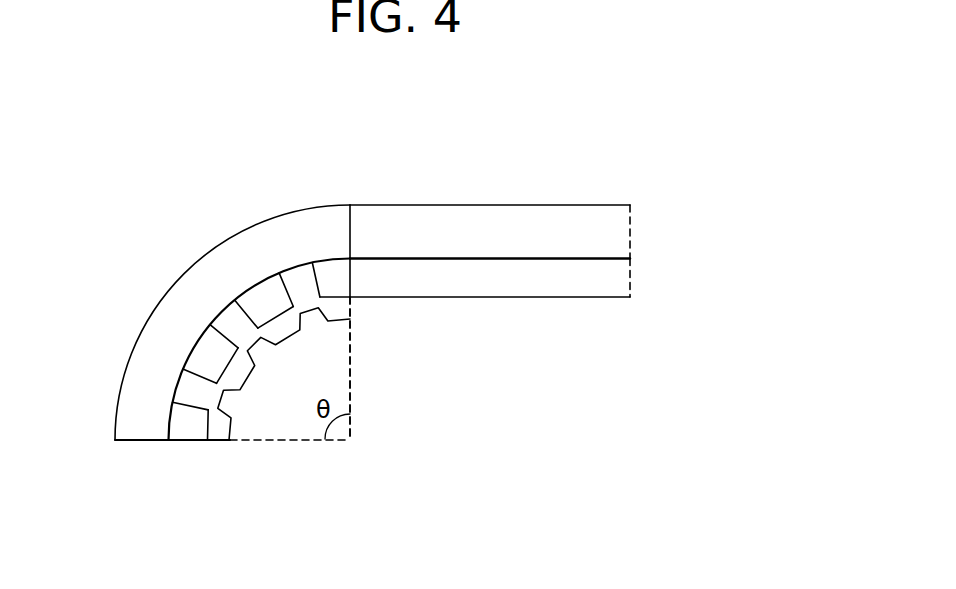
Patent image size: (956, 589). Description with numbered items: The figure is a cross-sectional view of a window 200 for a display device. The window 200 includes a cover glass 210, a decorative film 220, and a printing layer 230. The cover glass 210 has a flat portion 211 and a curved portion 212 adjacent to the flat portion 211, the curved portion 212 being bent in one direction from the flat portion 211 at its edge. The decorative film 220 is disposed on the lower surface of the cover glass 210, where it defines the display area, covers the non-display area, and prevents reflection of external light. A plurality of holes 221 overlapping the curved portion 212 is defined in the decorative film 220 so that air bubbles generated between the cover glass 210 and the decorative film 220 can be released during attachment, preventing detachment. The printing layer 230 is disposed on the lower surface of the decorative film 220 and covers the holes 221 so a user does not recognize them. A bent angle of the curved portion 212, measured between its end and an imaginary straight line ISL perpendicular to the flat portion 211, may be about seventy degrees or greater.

The window 200 is at (374, 293).
The cover glass 210 is at (372, 274).
The flat portion 211 is at (378, 217).
The curved portion 212 is at (327, 218).
The decorative film 220 is at (366, 334).
The holes 221 is at (243, 334).
The printing layer 230 is at (218, 432).
The imaginary straight line ISL is at (351, 396).